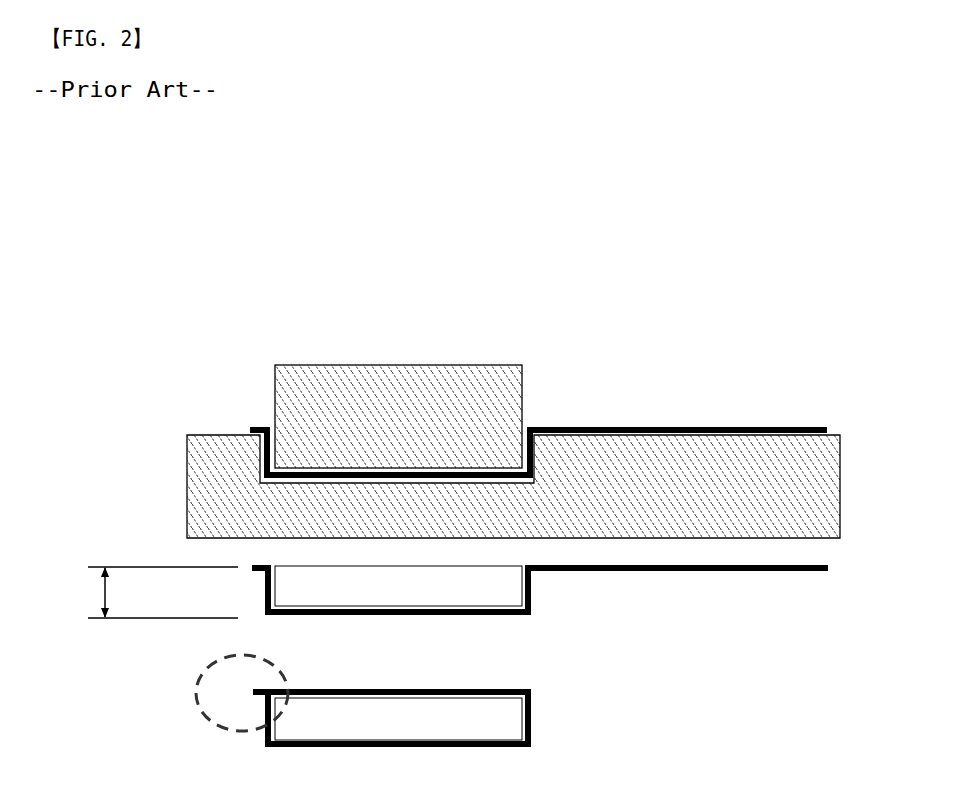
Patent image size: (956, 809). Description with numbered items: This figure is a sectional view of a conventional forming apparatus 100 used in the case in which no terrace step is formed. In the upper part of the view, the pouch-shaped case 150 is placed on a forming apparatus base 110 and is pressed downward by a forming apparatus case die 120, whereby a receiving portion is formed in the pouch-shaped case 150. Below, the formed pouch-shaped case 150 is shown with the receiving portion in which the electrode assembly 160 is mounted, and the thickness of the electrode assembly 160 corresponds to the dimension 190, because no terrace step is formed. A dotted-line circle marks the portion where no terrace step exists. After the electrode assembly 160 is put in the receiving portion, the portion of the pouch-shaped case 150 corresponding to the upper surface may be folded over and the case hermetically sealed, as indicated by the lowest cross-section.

The forming apparatus 100 is at (124, 343).
The forming apparatus base 110 is at (185, 488).
The forming apparatus case die 120 is at (522, 400).
The pouch-shaped case 150 is at (717, 417).
The electrode assembly 160 is at (305, 597).
The thickness of the electrode assembly 190 is at (147, 592).